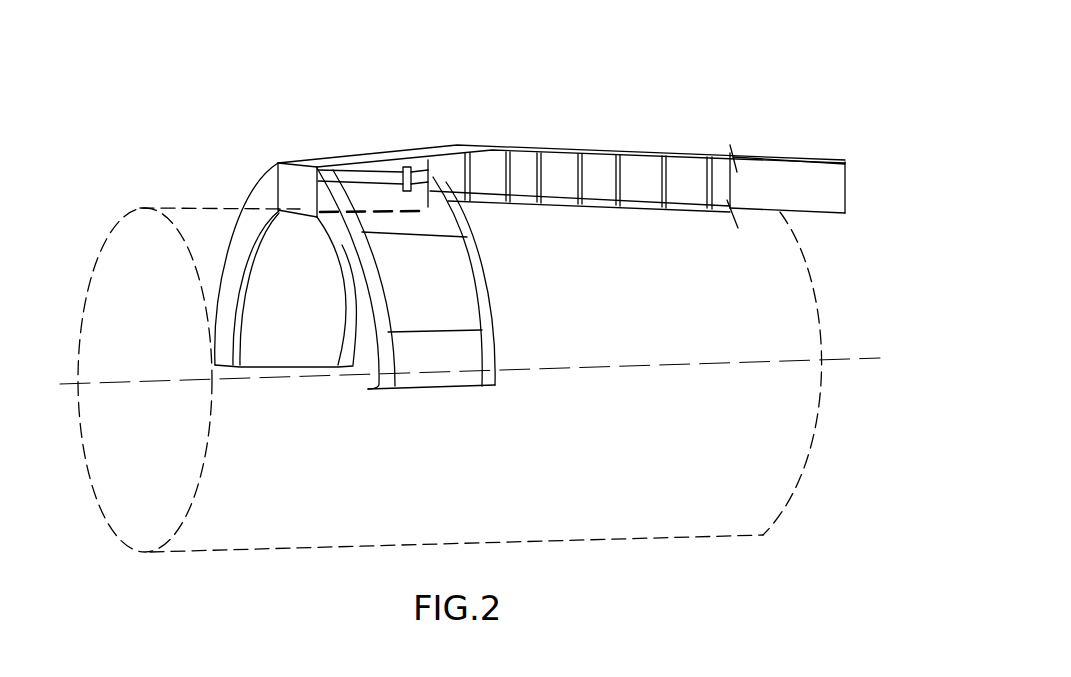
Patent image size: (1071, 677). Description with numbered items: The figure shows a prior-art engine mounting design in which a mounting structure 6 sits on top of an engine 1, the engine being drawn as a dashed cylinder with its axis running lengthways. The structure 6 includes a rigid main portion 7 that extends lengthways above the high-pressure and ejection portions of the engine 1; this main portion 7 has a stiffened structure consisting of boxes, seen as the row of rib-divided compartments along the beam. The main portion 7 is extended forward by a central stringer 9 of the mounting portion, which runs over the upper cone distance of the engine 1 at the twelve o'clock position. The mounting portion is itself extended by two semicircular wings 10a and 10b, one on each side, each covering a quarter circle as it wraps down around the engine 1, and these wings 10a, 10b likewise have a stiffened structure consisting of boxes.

The engine 1 is at (824, 392).
The structure 6 is at (530, 236).
The main portion 7 is at (614, 148).
The central stringer 9 is at (458, 143).
The semicircular wing 10a is at (372, 372).
The semicircular wing 10b is at (285, 338).